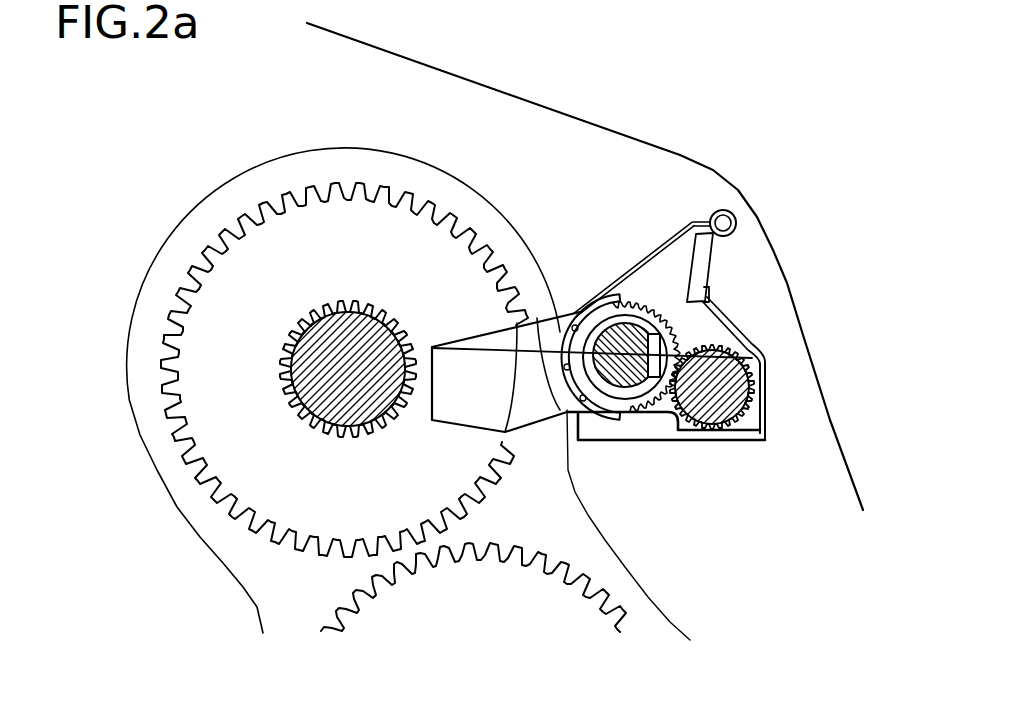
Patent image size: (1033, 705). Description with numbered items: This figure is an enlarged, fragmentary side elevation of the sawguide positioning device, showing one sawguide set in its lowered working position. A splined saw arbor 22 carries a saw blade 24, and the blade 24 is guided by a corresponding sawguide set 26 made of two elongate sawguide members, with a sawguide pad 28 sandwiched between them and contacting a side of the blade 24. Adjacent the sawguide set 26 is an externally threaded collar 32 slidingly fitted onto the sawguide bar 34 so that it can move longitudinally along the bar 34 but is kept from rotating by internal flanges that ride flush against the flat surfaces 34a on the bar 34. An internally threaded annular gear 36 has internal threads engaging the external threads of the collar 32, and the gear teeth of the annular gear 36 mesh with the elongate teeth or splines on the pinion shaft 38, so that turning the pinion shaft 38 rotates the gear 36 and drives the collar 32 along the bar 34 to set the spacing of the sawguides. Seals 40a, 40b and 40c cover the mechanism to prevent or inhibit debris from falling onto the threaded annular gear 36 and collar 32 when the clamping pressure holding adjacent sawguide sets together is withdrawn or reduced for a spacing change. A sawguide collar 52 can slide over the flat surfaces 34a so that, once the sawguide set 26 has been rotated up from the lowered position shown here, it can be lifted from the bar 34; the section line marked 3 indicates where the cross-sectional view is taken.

The splined saw arbor 22 is at (333, 305).
The saw blade 24 is at (225, 432).
The sawguide set 26 is at (470, 350).
The sawguide pad 28 is at (473, 408).
The section line 3- 3 is at (752, 358).
The externally threaded collar 32 is at (682, 338).
The sawguide bar 34 is at (613, 362).
The flat surface 34a is at (660, 343).
The internally threaded annular gear 36 is at (640, 306).
The pinion shaft 38 is at (706, 392).
The seal 40a is at (690, 223).
The seal 40b is at (767, 427).
The seal 40c is at (558, 332).
The sawguide collar 52 is at (578, 322).